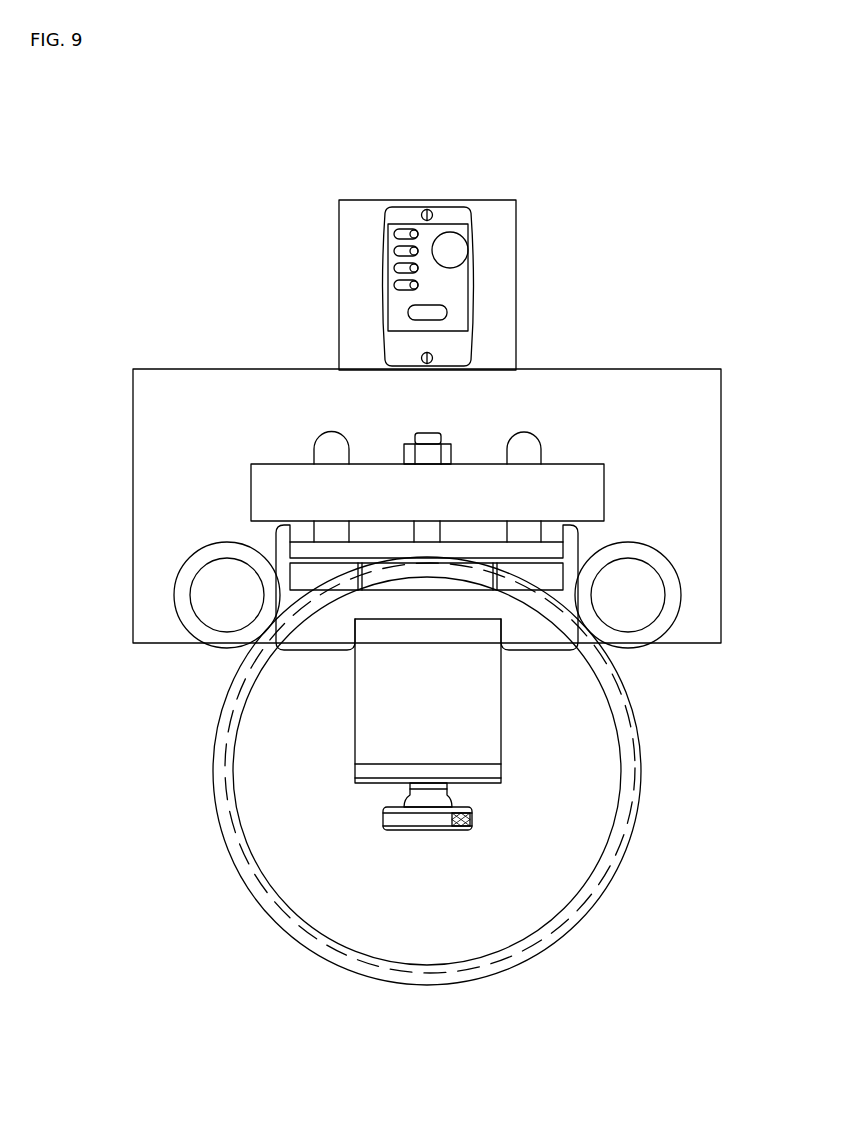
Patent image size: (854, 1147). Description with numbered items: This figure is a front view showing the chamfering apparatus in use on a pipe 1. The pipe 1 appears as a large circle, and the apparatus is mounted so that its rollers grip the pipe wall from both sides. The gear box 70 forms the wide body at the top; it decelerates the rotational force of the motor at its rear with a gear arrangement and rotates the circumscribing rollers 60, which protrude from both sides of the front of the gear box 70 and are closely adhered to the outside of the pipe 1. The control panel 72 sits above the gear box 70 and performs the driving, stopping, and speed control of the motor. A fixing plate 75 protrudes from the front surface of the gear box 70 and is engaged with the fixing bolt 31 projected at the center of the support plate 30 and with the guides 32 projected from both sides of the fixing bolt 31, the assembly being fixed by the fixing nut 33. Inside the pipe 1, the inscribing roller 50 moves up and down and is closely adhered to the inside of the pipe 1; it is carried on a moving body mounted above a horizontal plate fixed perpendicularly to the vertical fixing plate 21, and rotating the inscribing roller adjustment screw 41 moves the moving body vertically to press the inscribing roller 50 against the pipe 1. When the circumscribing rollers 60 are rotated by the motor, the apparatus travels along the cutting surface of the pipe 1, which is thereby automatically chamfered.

The pipe 1 is at (230, 823).
The vertical fixing plate 21 is at (457, 725).
The support plate 30 is at (556, 556).
The fixing bolt 31 is at (422, 438).
The guides 32 is at (328, 447).
The fixing nut 33 is at (443, 456).
The inscribing roller adjustment screw 41 is at (448, 826).
The inscribing roller 50 is at (430, 582).
The circumscribing rollers 60 is at (217, 590).
The gear box 70 is at (632, 422).
The control panel 72 is at (428, 222).
The fixing plate 75 is at (290, 484).